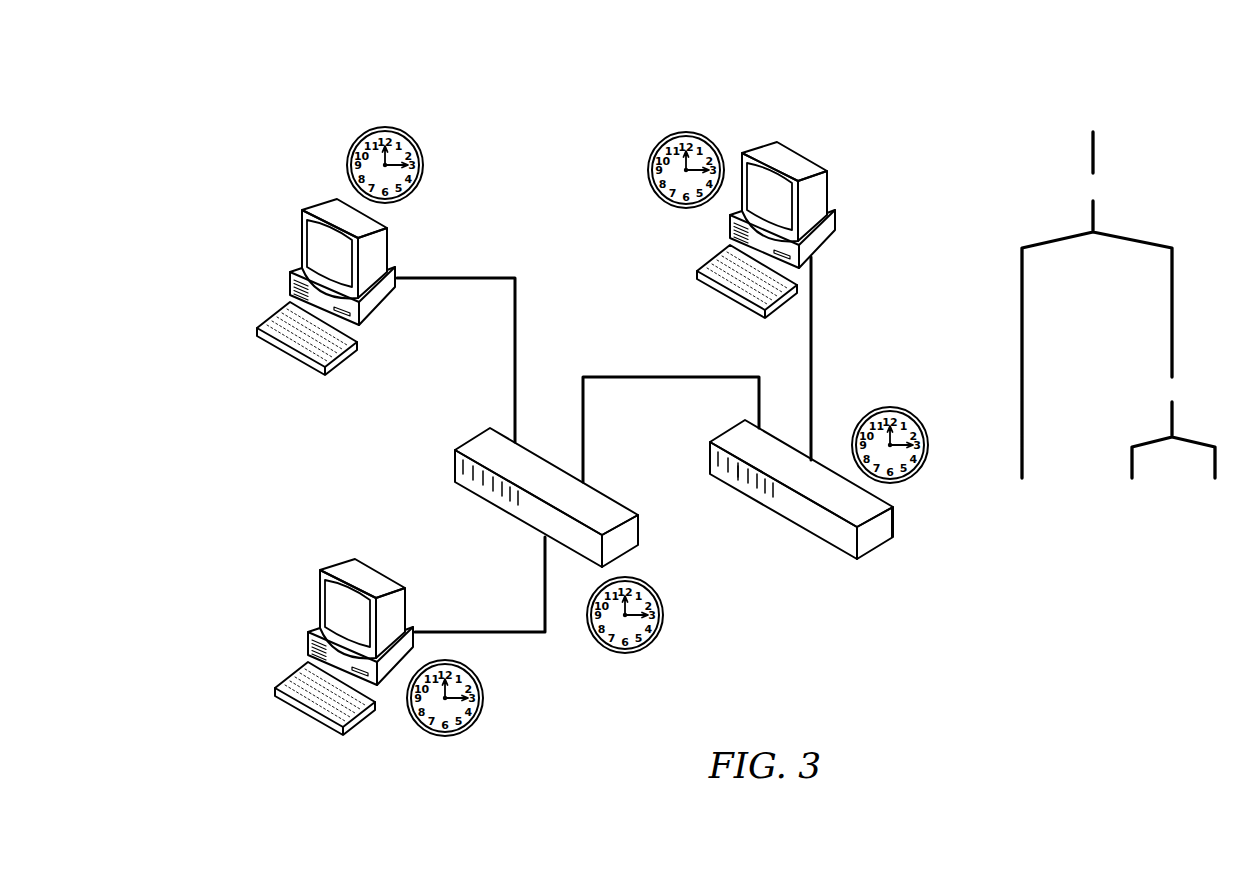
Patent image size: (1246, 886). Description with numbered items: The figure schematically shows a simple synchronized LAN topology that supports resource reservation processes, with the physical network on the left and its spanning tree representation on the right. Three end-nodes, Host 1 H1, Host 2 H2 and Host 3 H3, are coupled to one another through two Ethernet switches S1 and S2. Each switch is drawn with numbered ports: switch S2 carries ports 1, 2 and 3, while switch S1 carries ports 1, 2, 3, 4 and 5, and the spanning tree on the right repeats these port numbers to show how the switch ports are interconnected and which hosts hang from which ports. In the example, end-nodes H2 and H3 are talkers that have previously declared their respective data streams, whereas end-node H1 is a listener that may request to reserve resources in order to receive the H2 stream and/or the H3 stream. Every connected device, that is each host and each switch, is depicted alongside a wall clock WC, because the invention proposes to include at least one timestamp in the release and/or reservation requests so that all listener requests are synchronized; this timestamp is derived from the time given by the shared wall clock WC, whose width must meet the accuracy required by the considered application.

The end-node Host 1 H1 is at (869, 289).
The end-node Host 2 H2 is at (673, 355).
The end-node Host 3 H3 is at (725, 638).
The Ethernet switch S1 is at (900, 377).
The Ethernet switch S2 is at (812, 486).
The switch port 1 is at (774, 343).
The switch port 2 is at (883, 363).
The switch port 3 is at (805, 440).
The switch port 4 is at (901, 383).
The switch port 5 is at (1000, 397).
The wall clock WC is at (502, 767).